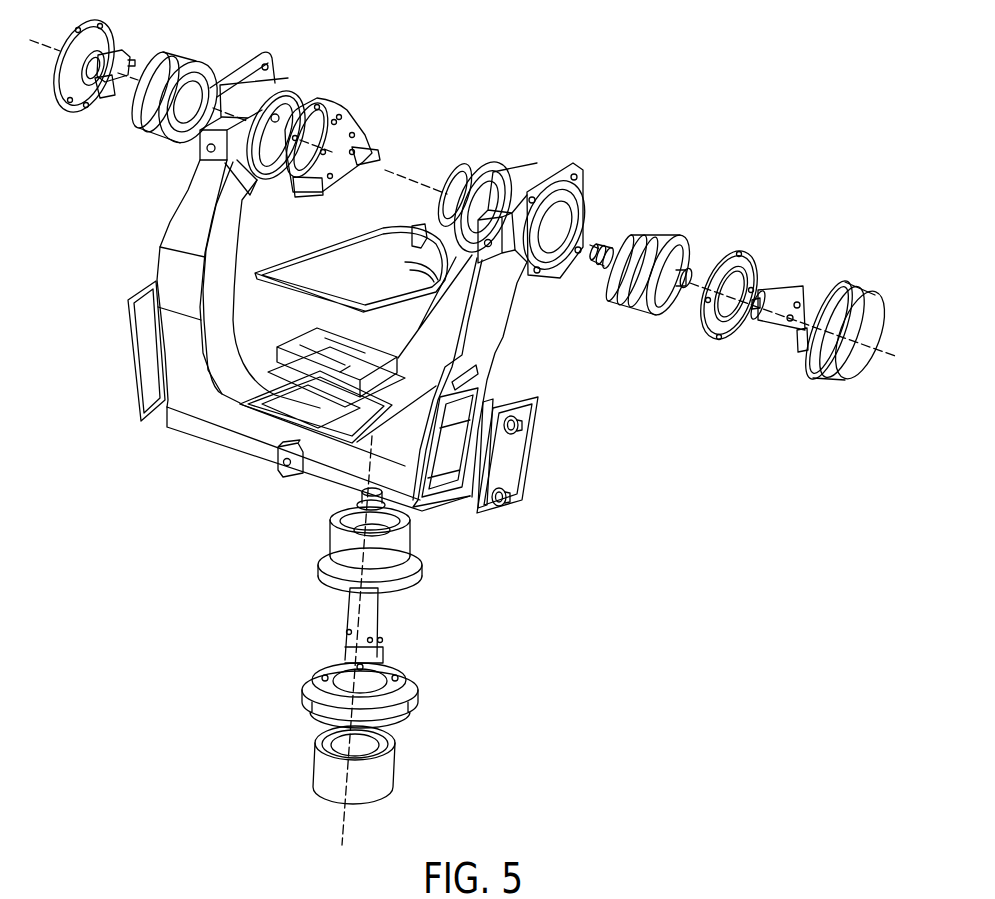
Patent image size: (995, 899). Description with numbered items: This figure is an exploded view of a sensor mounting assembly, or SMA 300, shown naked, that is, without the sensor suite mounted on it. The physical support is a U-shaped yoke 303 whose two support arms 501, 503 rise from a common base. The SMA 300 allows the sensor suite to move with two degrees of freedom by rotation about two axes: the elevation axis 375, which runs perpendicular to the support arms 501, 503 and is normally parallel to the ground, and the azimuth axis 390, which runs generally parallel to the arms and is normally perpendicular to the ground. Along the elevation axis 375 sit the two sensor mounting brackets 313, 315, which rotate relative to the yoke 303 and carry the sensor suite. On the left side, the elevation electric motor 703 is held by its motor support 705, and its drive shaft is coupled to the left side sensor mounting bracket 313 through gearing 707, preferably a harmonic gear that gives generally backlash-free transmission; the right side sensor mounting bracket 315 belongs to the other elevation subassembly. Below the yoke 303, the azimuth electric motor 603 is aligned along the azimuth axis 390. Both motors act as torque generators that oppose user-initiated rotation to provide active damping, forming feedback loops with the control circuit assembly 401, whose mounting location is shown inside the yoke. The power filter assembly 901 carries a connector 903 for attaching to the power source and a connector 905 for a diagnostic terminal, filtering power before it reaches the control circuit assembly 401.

The SMA 300 is at (539, 101).
The U-shaped yoke 303 is at (517, 292).
The left side sensor mounting bracket 313 is at (463, 162).
The right side sensor mounting bracket 315 is at (357, 118).
The elevation axis 375 is at (885, 358).
The azimuth axis 390 is at (348, 818).
The control circuit assembly 401 is at (305, 335).
The support arm 501 is at (498, 336).
The support arm 503 is at (177, 212).
The electric motor 603 is at (377, 615).
The electric motor 703 is at (785, 297).
The motor support 705 is at (747, 252).
The gearing 707 is at (693, 268).
The power filter assembly 901 is at (518, 465).
The connector 903 is at (517, 427).
The connector 905 is at (503, 502).